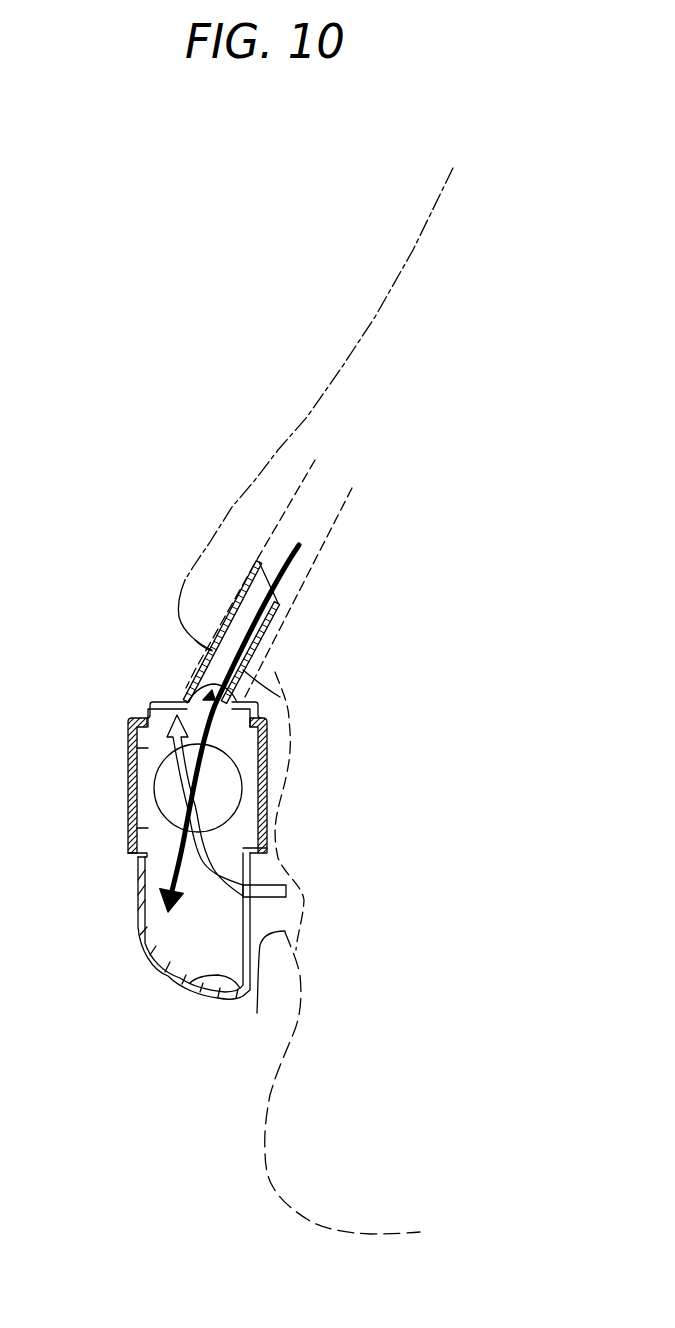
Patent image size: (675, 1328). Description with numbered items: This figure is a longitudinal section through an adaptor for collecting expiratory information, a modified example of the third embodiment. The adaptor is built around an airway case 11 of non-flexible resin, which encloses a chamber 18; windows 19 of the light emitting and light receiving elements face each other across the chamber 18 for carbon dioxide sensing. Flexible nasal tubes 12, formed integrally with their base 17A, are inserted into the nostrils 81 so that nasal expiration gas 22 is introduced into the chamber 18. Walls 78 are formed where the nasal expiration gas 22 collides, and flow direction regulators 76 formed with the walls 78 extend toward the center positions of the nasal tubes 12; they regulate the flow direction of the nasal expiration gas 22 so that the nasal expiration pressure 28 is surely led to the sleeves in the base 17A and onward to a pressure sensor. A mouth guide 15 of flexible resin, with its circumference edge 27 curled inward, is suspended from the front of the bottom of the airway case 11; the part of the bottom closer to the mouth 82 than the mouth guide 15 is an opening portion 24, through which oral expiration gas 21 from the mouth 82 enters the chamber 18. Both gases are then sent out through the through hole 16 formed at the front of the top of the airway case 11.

The airway case 11 is at (133, 722).
The nasal tubes 12 is at (260, 637).
The mouth guide 15 is at (145, 927).
The through hole 16 is at (130, 753).
The base of nasal tubes 17A is at (260, 708).
The chamber 18 is at (130, 830).
The windows 19 is at (225, 787).
The oral expiration gas 21 is at (270, 884).
The nasal expiration gas 22 is at (287, 570).
The opening portion 24 is at (253, 920).
The circumference edge 27 is at (190, 983).
The nasal expiration pressure 28 is at (212, 656).
The flow direction regulators 76 is at (195, 697).
The walls 78 is at (243, 740).
The nostrils 81 is at (327, 520).
The mouth 82 is at (257, 1013).